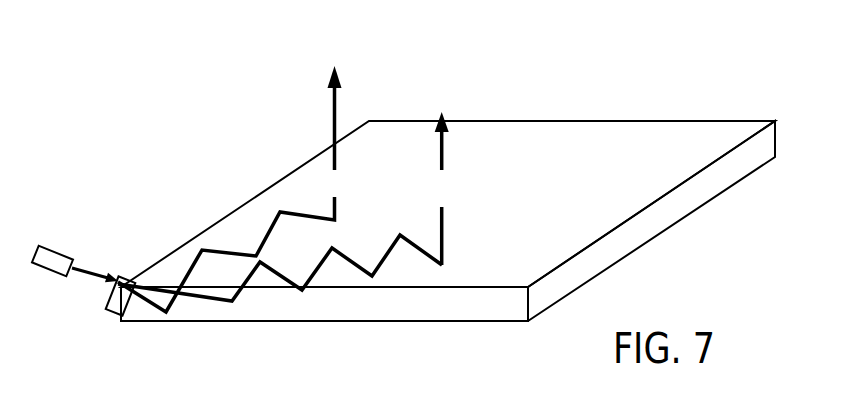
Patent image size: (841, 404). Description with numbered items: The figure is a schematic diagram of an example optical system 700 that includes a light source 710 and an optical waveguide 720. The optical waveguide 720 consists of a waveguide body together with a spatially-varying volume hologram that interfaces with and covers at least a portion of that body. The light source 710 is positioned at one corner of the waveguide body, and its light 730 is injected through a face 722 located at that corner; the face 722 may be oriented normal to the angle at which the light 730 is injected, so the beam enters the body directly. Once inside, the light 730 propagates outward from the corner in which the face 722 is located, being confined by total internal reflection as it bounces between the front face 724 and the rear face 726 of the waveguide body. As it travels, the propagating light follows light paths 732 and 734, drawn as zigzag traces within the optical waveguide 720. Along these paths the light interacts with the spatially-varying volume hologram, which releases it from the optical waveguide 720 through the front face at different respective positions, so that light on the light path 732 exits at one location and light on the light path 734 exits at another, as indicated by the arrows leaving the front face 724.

The optical system 700 is at (696, 92).
The light source 710 is at (57, 246).
The optical waveguide 720 is at (490, 313).
The face 722 is at (118, 303).
The front face 724 is at (558, 206).
The rear face 726 is at (370, 322).
The light 730 is at (85, 270).
The light path 732 is at (234, 189).
The light path 734 is at (440, 188).